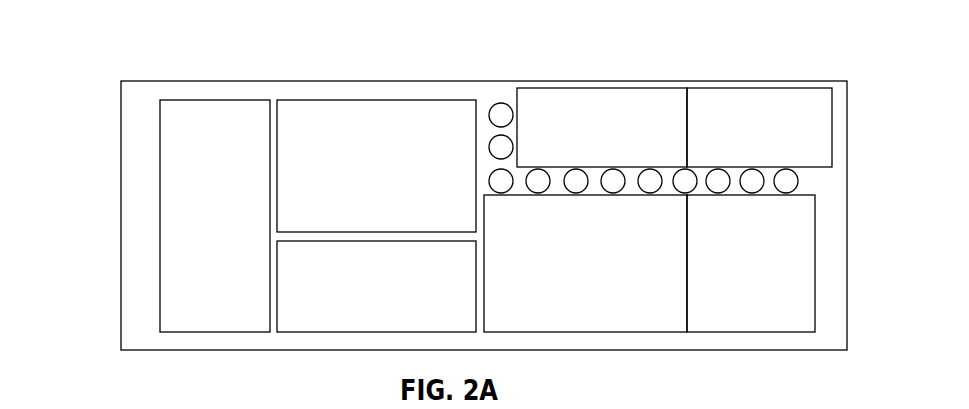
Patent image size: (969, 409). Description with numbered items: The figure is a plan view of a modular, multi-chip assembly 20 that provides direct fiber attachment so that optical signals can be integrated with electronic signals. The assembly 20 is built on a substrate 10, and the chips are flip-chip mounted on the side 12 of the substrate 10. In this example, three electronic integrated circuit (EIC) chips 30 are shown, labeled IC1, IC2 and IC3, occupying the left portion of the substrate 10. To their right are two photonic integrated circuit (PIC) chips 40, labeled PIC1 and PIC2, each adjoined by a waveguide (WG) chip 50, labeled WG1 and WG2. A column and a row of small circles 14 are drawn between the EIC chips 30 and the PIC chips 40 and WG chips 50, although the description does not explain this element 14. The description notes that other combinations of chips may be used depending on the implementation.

The substrate 10 is at (117, 122).
The side of the substrate 12 is at (140, 90).
The interconnects (solder bumps) 14 is at (500, 102).
The modular multi-chip assembly 20 is at (855, 122).
The electronic integrated circuit (EIC) chip 30 is at (297, 100).
The photonic integrated circuit (PIC) chip 40 is at (602, 88).
The waveguide (WG) chip 50 is at (818, 87).